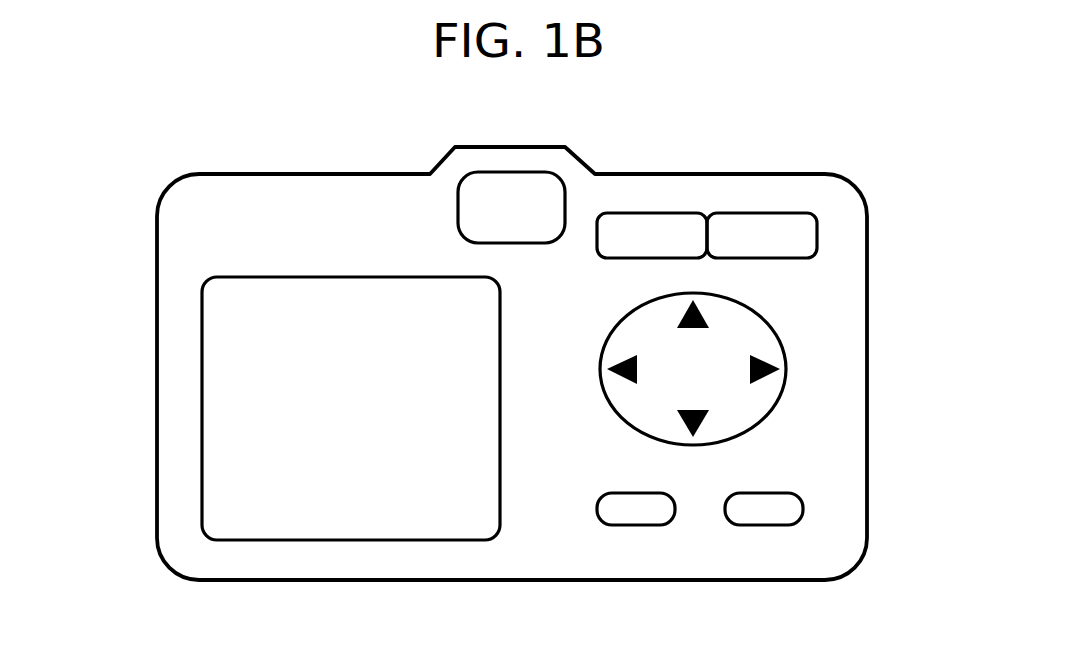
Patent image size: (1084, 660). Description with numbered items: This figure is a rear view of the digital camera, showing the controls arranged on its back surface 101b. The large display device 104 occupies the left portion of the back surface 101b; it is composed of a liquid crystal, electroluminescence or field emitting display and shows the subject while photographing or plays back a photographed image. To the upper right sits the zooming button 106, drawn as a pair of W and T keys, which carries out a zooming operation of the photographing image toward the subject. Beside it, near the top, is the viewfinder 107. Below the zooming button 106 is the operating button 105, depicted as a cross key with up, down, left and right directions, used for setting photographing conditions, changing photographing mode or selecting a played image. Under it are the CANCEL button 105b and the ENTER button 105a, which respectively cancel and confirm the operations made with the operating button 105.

The back surface 101b is at (165, 438).
The display device 104 is at (312, 541).
The operating button 105 is at (779, 400).
The ENTER button 105a is at (803, 512).
The CANCEL button 105b is at (597, 512).
The zooming button 106 is at (735, 213).
The viewfinder 107 is at (462, 178).